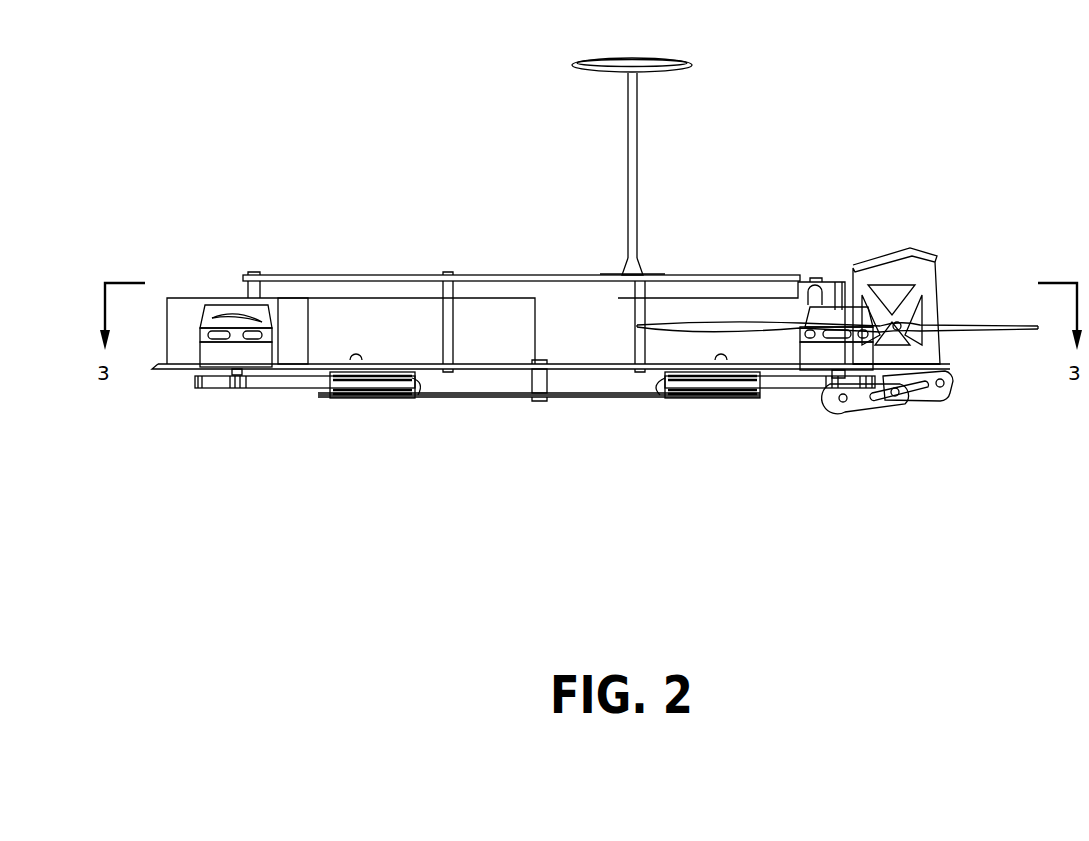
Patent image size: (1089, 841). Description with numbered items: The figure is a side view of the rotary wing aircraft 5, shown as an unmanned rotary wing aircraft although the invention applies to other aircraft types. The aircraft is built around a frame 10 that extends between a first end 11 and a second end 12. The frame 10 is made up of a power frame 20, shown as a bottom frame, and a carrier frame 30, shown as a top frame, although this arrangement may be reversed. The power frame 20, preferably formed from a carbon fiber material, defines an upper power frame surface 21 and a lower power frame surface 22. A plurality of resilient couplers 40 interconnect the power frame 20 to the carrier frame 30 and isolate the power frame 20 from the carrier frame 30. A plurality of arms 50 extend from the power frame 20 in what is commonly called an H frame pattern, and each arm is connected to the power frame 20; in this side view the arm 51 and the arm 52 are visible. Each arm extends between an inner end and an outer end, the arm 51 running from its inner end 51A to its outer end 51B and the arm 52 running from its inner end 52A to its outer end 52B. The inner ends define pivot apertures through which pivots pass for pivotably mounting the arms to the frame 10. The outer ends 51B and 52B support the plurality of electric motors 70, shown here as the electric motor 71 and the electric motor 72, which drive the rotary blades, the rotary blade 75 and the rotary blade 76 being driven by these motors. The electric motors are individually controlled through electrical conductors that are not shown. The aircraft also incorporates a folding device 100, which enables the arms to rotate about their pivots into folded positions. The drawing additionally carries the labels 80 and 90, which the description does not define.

The rotary wing aircraft 5 is at (125, 156).
The folding device 100 is at (455, 172).
The frame 10 is at (317, 275).
The first end 11 is at (950, 368).
The second end 12 is at (158, 369).
The power frame 20 is at (493, 397).
The upper power frame surface 21 is at (460, 369).
The lower power frame surface 22 is at (580, 397).
The carrier frame 30 is at (523, 275).
The resilient coupler 40 is at (540, 383).
The plurality of arms 50 is at (910, 465).
The arm 51 is at (772, 382).
The inner end 51A is at (665, 382).
The outer end 51B is at (825, 390).
The arm 52 is at (313, 383).
The inner end 52A is at (412, 382).
The outer end 52B is at (225, 382).
The plurality of electric motors 70 is at (942, 183).
The electric motor 71 is at (835, 307).
The electric motor 72 is at (232, 305).
The rotary blade 75 is at (738, 322).
The rotary blade 76 is at (238, 318).
The antenna mast 80 is at (712, 186).
The mounting bracket 90 is at (994, 243).